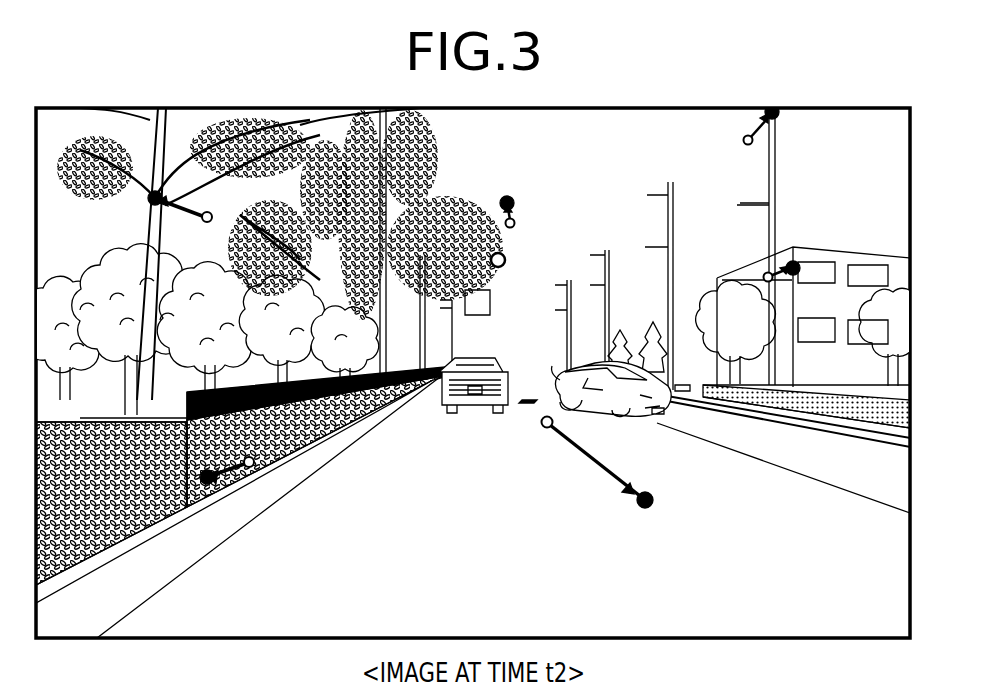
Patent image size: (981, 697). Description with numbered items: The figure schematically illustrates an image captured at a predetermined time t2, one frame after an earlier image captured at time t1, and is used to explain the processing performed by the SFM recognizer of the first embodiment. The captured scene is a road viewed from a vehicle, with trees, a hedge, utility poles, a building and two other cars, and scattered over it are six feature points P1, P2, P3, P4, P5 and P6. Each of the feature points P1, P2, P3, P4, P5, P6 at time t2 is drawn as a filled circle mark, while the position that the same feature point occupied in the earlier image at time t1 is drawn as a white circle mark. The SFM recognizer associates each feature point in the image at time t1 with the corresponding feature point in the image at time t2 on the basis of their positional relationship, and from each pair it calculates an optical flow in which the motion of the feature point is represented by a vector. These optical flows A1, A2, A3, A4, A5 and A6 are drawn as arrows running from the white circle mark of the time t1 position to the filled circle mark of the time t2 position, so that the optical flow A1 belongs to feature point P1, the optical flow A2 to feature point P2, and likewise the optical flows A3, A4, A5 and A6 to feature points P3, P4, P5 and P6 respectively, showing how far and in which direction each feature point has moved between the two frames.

The feature point P1 is at (146, 201).
The optical flow A1 is at (188, 217).
The feature point P2 is at (210, 485).
The optical flow A2 is at (235, 480).
The feature point P3 is at (508, 196).
The optical flow A3 is at (521, 214).
The feature point P4 is at (652, 504).
The optical flow A4 is at (562, 452).
The feature point P5 is at (778, 115).
The optical flow A5 is at (743, 138).
The feature point P6 is at (800, 266).
The optical flow A6 is at (776, 269).